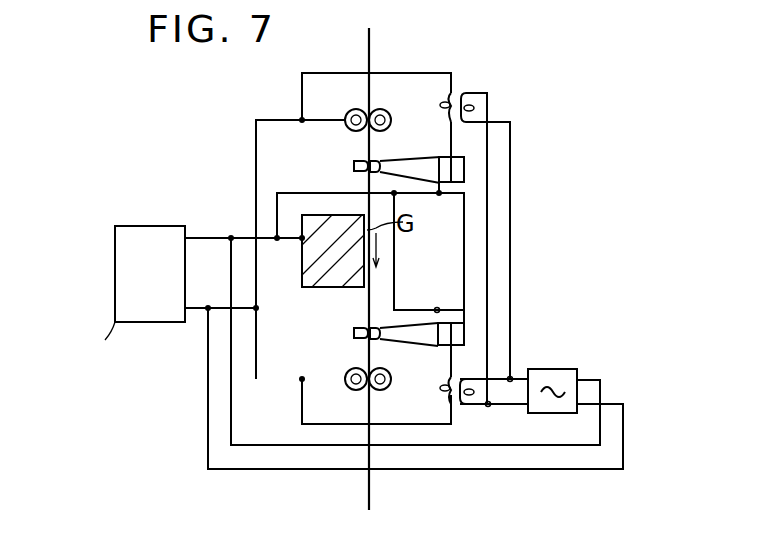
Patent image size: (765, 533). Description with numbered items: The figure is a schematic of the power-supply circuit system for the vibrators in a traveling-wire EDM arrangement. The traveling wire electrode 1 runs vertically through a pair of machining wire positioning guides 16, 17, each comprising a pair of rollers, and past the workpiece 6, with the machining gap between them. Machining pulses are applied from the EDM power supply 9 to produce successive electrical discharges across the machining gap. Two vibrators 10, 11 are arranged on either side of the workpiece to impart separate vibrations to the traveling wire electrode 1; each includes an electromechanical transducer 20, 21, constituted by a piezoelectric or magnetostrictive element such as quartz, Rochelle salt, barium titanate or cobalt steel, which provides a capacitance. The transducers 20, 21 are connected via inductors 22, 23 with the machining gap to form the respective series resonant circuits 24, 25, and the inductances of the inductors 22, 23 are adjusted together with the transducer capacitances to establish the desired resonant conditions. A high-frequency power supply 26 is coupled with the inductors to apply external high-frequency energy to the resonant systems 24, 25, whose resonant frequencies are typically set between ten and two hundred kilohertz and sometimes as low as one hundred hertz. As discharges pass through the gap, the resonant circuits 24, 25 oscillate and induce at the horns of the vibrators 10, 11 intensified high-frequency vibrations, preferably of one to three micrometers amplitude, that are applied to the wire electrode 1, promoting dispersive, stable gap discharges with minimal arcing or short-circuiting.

The traveling wire electrode 1 is at (372, 47).
The workpiece 6 is at (302, 272).
The EDM power supply 9 is at (115, 250).
The vibrator 10 is at (417, 157).
The vibrator 11 is at (413, 345).
The machining wire positioning guide 16 is at (388, 113).
The machining wire positioning guide 17 is at (347, 373).
The electromechanical transducer 20 is at (464, 173).
The electromechanical transducer 21 is at (465, 325).
The inductor 22 is at (460, 93).
The inductor 23 is at (455, 403).
The series resonant circuit 24 is at (472, 140).
The series resonant circuit 25 is at (470, 358).
The high-frequency power supply 26 is at (578, 370).